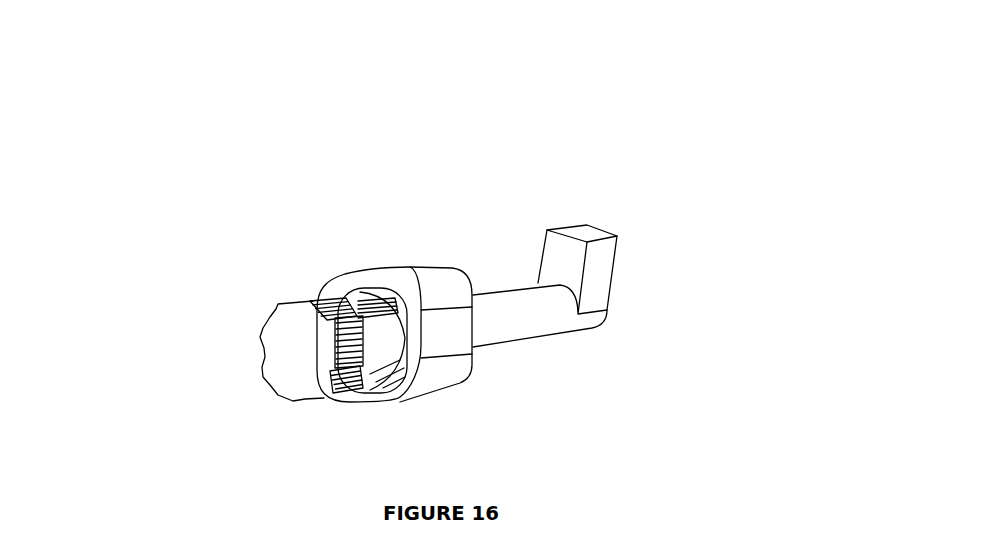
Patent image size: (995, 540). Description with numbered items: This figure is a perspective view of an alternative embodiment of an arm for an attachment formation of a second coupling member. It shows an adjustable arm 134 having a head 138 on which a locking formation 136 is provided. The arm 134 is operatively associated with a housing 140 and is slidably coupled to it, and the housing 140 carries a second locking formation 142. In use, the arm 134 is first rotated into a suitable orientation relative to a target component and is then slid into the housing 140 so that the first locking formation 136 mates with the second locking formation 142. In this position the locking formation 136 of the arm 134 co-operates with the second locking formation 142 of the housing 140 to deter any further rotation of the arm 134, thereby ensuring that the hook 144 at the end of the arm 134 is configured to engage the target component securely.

The adjustable arm 134 is at (653, 130).
The locking formation 136 is at (228, 338).
The head 138 is at (275, 307).
The housing 140 is at (432, 276).
The second locking formation 142 is at (365, 406).
The hook 144 is at (605, 258).